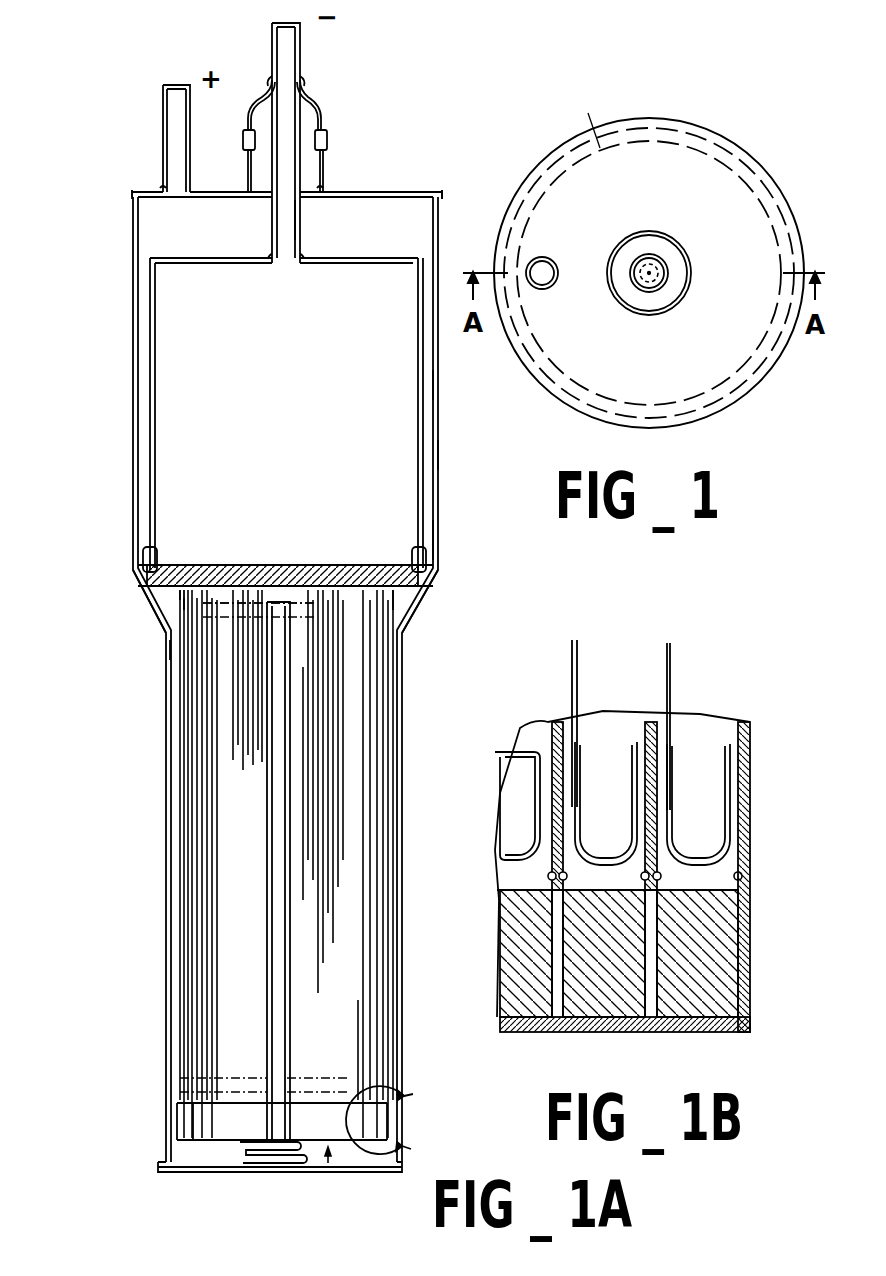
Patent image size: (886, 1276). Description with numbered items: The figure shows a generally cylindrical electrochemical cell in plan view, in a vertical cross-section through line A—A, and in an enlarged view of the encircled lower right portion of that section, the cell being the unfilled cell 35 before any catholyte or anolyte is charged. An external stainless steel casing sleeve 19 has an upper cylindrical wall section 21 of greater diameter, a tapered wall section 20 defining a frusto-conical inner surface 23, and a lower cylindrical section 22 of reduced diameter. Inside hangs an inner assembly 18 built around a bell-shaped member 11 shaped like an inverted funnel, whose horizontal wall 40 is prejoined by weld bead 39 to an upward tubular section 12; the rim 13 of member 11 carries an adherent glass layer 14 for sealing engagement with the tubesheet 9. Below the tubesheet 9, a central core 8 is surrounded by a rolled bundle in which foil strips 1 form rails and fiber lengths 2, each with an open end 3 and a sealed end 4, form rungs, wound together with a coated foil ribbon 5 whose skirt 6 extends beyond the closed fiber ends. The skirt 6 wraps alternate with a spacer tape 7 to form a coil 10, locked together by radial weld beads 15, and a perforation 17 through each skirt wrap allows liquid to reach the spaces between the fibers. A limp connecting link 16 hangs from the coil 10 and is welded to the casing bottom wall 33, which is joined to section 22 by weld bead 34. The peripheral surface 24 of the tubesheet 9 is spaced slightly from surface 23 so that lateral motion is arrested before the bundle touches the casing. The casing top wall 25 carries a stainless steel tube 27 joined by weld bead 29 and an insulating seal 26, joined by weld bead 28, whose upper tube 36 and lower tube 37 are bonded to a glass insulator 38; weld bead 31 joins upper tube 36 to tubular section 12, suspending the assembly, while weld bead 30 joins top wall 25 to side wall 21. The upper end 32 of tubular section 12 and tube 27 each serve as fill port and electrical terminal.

In FIG. 1A, the foil strips 1 is at (225, 607).
In FIG. 1B, the foil strips 1 is at (573, 647).
In FIG. 1A, the fiber lengths 2 is at (185, 588).
In FIG. 1B, the fiber lengths 2 is at (677, 750).
In FIG. 1A, the open end 3 is at (185, 563).
In FIG. 1A, the sealed end 4 is at (390, 1085).
In FIG. 1B, the sealed end 4 is at (750, 847).
In FIG. 1A, the ribbon 5 is at (187, 797).
In FIG. 1B, the ribbon 5 is at (653, 713).
In FIG. 1A, the skirt 6 is at (187, 1127).
In FIG. 1B, the skirt 6 is at (550, 945).
In FIG. 1A, the spacer tape 7 is at (198, 1130).
In FIG. 1B, the spacer tape 7 is at (587, 985).
In FIG. 1A, the central core 8 is at (288, 600).
In FIG. 1, the central core 8 is at (652, 285).
In FIG. 1A, the tubesheet 9 is at (397, 563).
In FIG. 1A, the coil 10 is at (328, 1165).
In FIG. 1A, the bell-shaped member 11 is at (425, 383).
In FIG. 1, the bell-shaped member 11 is at (581, 119).
In FIG. 1A, the tubular section 12 is at (302, 218).
In FIG. 1A, the rim 13 is at (143, 572).
In FIG. 1A, the adherent glass layer 14 is at (425, 553).
In FIG. 1A, the weld beads 15 is at (347, 1143).
In FIG. 1B, the weld beads 15 is at (678, 1033).
In FIG. 1A, the limp connecting link 16 is at (280, 1158).
In FIG. 1A, the perforation 17 is at (187, 1092).
In FIG. 1B, the perforation 17 is at (750, 878).
In FIG. 1A, the inner assembly 18 is at (480, 513).
In FIG. 1A, the casing sleeve 19 is at (440, 453).
In FIG. 1A, the tapered wall section 20 is at (138, 580).
In FIG. 1A, the upper cylindrical wall section 21 is at (133, 413).
In FIG. 1, the upper cylindrical wall section 21 is at (773, 190).
In FIG. 1A, the lower cylindrical section 22 is at (168, 930).
In FIG. 1A, the frusto-conical inner surface 23 is at (410, 612).
In FIG. 1A, the peripheral surface 24 is at (432, 580).
In FIG. 1A, the casing top wall 25 is at (417, 192).
In FIG. 1A, the insulating seal 26 is at (337, 133).
In FIG. 1A, the stainless steel tube 27 is at (162, 123).
In FIG. 1, the stainless steel tube 27 is at (550, 282).
In FIG. 1A, the weld bead 28 is at (327, 185).
In FIG. 1A, the weld bead 29 is at (160, 185).
In FIG. 1A, the weld bead 30 is at (133, 198).
In FIG. 1, the weld bead 30 is at (723, 135).
In FIG. 1A, the weld bead 31 is at (303, 82).
In FIG. 1, the weld bead 31 is at (670, 272).
In FIG. 1A, the upper end 32 is at (272, 52).
In FIG. 1, the upper end 32 is at (650, 267).
In FIG. 1A, the casing bottom wall 33 is at (223, 1170).
In FIG. 1A, the weld bead 34 is at (160, 1163).
In FIG. 1A, the unfilled cell 35 is at (420, 803).
In FIG. 1A, the upper tube 36 is at (317, 110).
In FIG. 1A, the lower tube 37 is at (327, 165).
In FIG. 1A, the glass insulator 38 is at (243, 137).
In FIG. 1, the glass insulator 38 is at (690, 297).
In FIG. 1A, the weld bead 39 is at (267, 257).
In FIG. 1A, the horizontal wall 40 is at (343, 260).